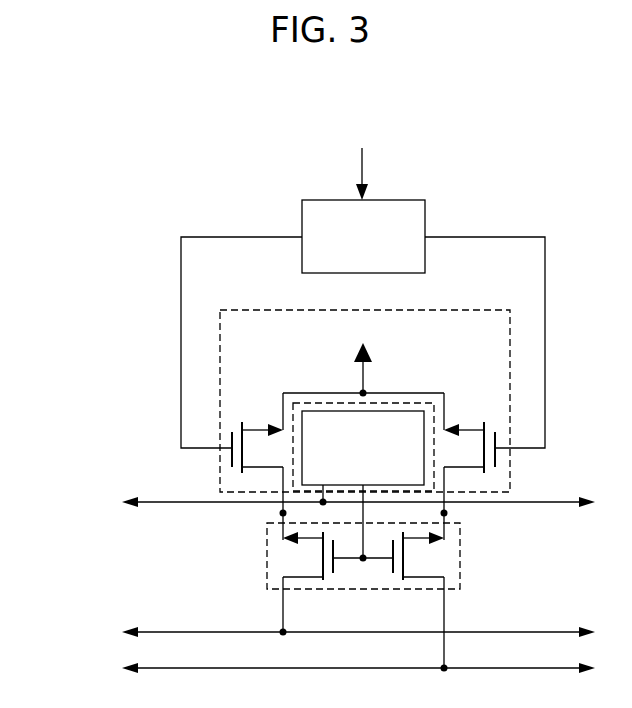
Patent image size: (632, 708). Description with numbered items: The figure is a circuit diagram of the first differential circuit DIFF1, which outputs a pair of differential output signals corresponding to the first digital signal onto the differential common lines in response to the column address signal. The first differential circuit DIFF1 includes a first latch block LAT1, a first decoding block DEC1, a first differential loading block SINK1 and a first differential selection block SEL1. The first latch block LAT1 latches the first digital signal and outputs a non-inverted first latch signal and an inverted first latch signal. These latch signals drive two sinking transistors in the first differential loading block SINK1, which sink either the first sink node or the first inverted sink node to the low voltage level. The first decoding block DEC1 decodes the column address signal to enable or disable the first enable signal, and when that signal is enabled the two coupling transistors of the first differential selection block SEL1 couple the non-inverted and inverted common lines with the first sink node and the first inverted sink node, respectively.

The first differential circuit DIFF1 is at (148, 97).
The first latch block LAT1 is at (363, 236).
The first differential loading block SINK1 is at (502, 310).
The first decoding block DEC1 is at (363, 482).
The first differential selection block SEL1 is at (461, 550).